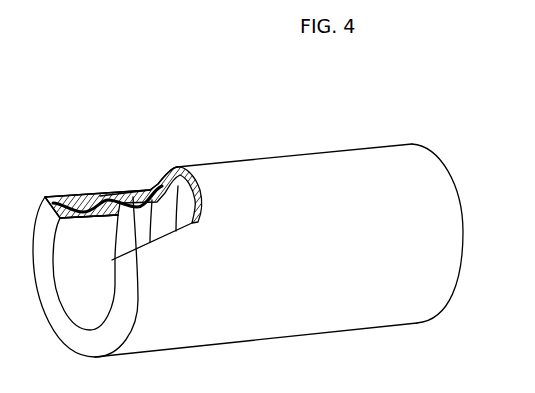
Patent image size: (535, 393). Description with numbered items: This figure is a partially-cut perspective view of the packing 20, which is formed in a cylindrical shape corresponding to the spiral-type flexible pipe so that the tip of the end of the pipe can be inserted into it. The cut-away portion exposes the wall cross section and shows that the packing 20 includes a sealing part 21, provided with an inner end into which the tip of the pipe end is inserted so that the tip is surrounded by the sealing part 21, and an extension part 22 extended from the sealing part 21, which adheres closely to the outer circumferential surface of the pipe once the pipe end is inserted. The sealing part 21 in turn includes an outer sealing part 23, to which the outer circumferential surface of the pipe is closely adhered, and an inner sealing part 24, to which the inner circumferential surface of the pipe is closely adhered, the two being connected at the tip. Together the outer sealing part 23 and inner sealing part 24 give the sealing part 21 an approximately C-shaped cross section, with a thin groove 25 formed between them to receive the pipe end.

The packing 20 is at (145, 97).
The sealing part 21 is at (93, 133).
The extension part 22 is at (136, 191).
The outer sealing part 23 is at (90, 203).
The inner sealing part 24 is at (73, 203).
The thin groove 25 is at (112, 193).